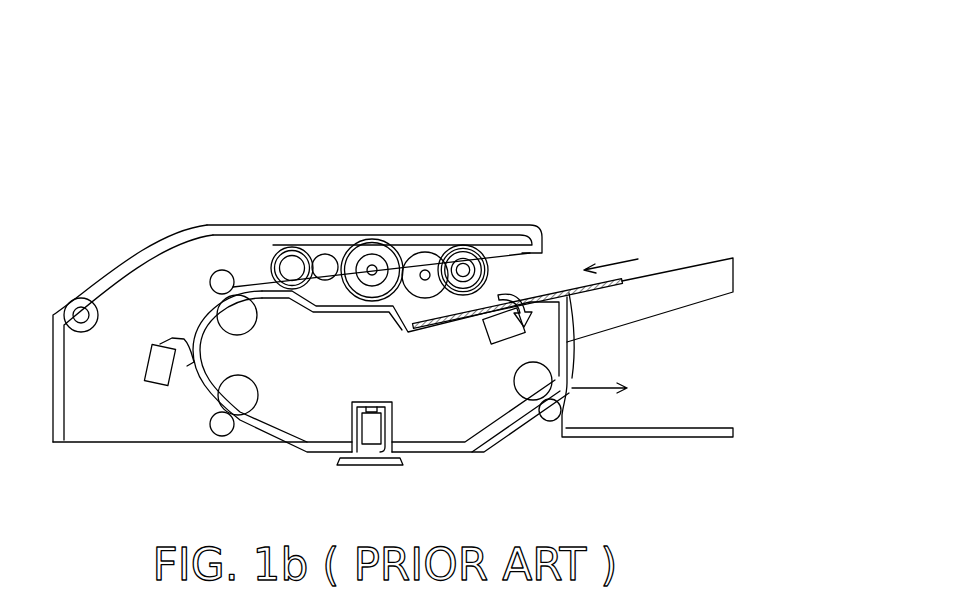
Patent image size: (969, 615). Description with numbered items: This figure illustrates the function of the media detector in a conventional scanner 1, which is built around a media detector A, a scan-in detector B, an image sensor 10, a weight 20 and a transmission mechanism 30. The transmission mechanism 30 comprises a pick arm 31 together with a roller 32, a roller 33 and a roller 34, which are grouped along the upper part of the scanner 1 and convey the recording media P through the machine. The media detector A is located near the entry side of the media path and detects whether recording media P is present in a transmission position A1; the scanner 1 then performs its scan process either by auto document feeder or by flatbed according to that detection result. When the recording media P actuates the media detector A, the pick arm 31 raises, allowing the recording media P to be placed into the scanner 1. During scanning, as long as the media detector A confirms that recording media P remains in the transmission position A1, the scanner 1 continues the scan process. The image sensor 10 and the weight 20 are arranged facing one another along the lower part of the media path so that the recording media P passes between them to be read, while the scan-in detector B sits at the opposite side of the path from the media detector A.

The scanner 1 is at (72, 68).
The image sensor 10 is at (373, 466).
The weight 20 is at (371, 427).
The transmission mechanism 30 is at (567, 140).
The pick arm 31 is at (463, 262).
The roller 32 is at (222, 282).
The roller 33 is at (223, 424).
The roller 34 is at (569, 293).
The media detector A is at (507, 334).
The transmission position A1 is at (595, 298).
The scan-in detector B is at (158, 385).
The recording media P is at (608, 280).